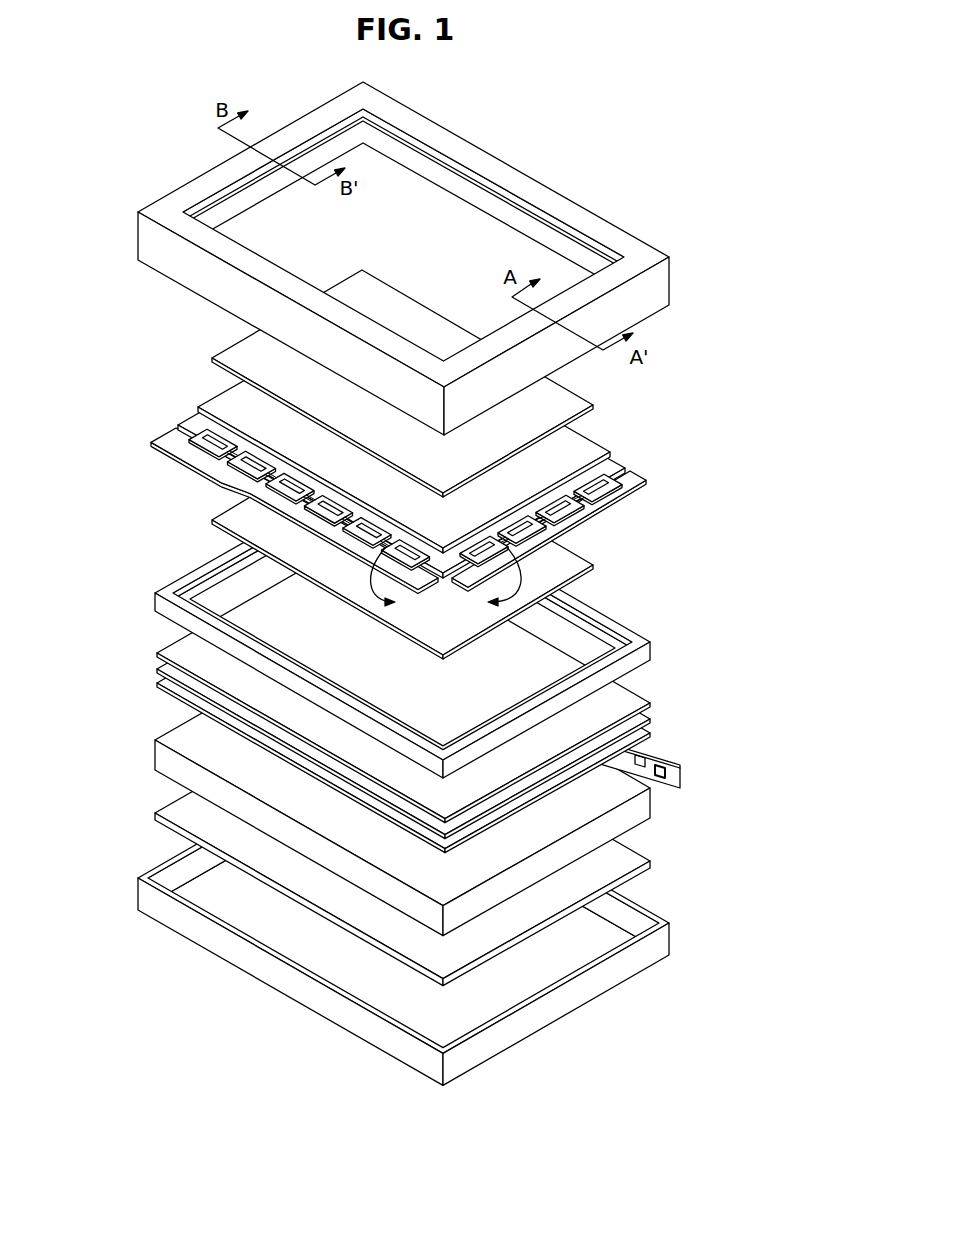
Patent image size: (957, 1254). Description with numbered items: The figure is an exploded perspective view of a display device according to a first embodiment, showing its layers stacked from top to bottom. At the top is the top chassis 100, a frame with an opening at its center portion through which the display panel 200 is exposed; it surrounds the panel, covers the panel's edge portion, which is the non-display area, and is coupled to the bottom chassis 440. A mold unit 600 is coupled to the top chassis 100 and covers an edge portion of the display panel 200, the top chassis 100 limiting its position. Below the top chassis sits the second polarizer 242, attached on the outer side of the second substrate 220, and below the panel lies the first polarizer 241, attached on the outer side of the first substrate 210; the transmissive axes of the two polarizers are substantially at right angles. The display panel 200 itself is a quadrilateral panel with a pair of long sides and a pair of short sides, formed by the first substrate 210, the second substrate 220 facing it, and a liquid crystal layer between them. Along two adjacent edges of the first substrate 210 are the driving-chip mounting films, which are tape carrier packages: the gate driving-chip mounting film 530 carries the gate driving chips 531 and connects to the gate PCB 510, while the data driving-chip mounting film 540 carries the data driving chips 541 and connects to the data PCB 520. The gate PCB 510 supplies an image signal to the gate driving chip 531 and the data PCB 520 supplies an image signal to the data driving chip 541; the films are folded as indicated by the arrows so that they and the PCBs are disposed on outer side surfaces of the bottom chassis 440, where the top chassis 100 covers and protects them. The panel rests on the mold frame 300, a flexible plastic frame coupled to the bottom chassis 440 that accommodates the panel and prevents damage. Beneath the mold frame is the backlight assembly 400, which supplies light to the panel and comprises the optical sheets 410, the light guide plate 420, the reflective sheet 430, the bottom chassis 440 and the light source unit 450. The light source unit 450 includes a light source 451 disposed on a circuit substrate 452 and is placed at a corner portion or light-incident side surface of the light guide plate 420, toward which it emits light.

The top chassis 100 is at (443, 258).
The mold unit 600 is at (558, 225).
The display panel 200 is at (488, 444).
The first substrate 210 is at (630, 462).
The second substrate 220 is at (603, 448).
The first polarizer 241 is at (583, 563).
The second polarizer 242 is at (572, 398).
The mold frame 300 is at (175, 617).
The backlight assembly 400 is at (404, 810).
The optical sheets 410 is at (360, 694).
The light guide plate 420 is at (163, 760).
The reflective sheet 430 is at (163, 828).
The bottom chassis 440 is at (160, 900).
The light source unit 450 is at (679, 764).
The light source 451 is at (665, 762).
The circuit substrate 452 is at (748, 745).
The gate PCB 510 is at (641, 475).
The data PCB 520 is at (180, 462).
The gate driving-chip mounting film 530 is at (625, 487).
The gate driving chip 531 is at (605, 478).
The data driving-chip mounting film 540 is at (205, 436).
The data driving chip 541 is at (172, 437).